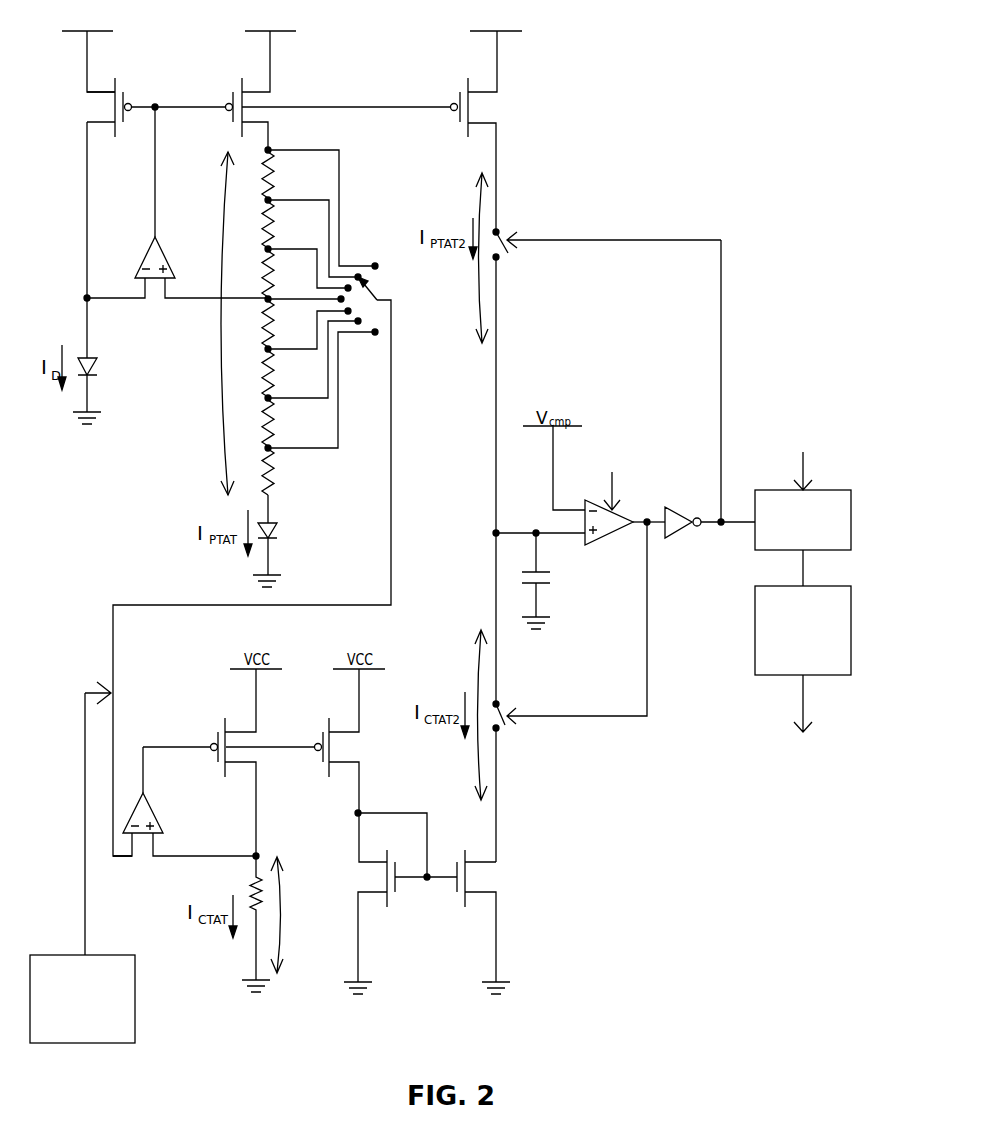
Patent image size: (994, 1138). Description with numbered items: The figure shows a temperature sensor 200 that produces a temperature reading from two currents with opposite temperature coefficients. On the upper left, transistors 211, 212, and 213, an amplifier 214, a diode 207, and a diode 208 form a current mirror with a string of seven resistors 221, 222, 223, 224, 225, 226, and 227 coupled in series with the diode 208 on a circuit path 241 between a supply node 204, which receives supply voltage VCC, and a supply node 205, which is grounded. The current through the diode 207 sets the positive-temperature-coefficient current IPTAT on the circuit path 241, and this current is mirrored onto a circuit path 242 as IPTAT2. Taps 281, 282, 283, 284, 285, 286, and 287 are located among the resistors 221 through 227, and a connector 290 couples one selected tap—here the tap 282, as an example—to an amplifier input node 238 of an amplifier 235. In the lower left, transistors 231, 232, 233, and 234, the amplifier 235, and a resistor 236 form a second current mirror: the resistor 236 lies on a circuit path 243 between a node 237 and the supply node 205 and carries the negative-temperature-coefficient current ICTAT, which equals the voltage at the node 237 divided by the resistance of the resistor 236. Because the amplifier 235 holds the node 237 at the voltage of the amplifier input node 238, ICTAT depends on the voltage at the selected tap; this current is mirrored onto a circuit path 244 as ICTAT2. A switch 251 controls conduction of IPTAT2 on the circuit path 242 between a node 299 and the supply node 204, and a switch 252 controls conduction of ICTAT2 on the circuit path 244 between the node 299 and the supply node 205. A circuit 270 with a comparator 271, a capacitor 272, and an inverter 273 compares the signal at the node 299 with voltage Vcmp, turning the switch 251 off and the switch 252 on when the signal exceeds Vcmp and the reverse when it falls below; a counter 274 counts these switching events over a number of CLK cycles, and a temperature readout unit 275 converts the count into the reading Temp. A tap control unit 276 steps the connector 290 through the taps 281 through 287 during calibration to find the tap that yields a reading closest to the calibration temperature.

The temperature sensor 200 is at (640, 46).
The supply node 204 is at (271, 62).
The supply node 205 is at (269, 565).
The diode 207 is at (92, 364).
The diode 208 is at (273, 528).
The transistor 211 is at (116, 86).
The transistor 212 is at (243, 86).
The transistor 213 is at (469, 86).
The amplifier 214 is at (164, 256).
The resistor 221 is at (256, 175).
The resistor 222 is at (256, 225).
The resistor 223 is at (256, 274).
The resistor 224 is at (256, 324).
The resistor 225 is at (256, 374).
The resistor 226 is at (256, 423).
The resistor 227 is at (255, 472).
The transistor 231 is at (227, 726).
The transistor 232 is at (330, 726).
The transistor 233 is at (388, 855).
The transistor 234 is at (466, 855).
The amplifier 235 is at (152, 806).
The resistor 236 is at (250, 896).
The node 237 is at (253, 854).
The amplifier input node 238 is at (120, 858).
The circuit path 241 is at (222, 400).
The circuit path 242 is at (481, 298).
The circuit path 243 is at (280, 906).
The circuit path 244 is at (480, 775).
The switch 251 is at (502, 233).
The switch 252 is at (570, 626).
The circuit 270 is at (797, 375).
The comparator 271 is at (606, 539).
The capacitor 272 is at (551, 577).
The inverter 273 is at (684, 514).
The counter 274 is at (779, 490).
The temperature readout unit 275 is at (779, 586).
The tap control unit 276 is at (56, 955).
The tap 281 is at (278, 152).
The tap 282 is at (278, 202).
The tap 283 is at (278, 251).
The tap 284 is at (278, 300).
The tap 285 is at (278, 347).
The tap 286 is at (278, 396).
The tap 287 is at (278, 446).
The connector 290 is at (381, 292).
The node 299 is at (493, 533).